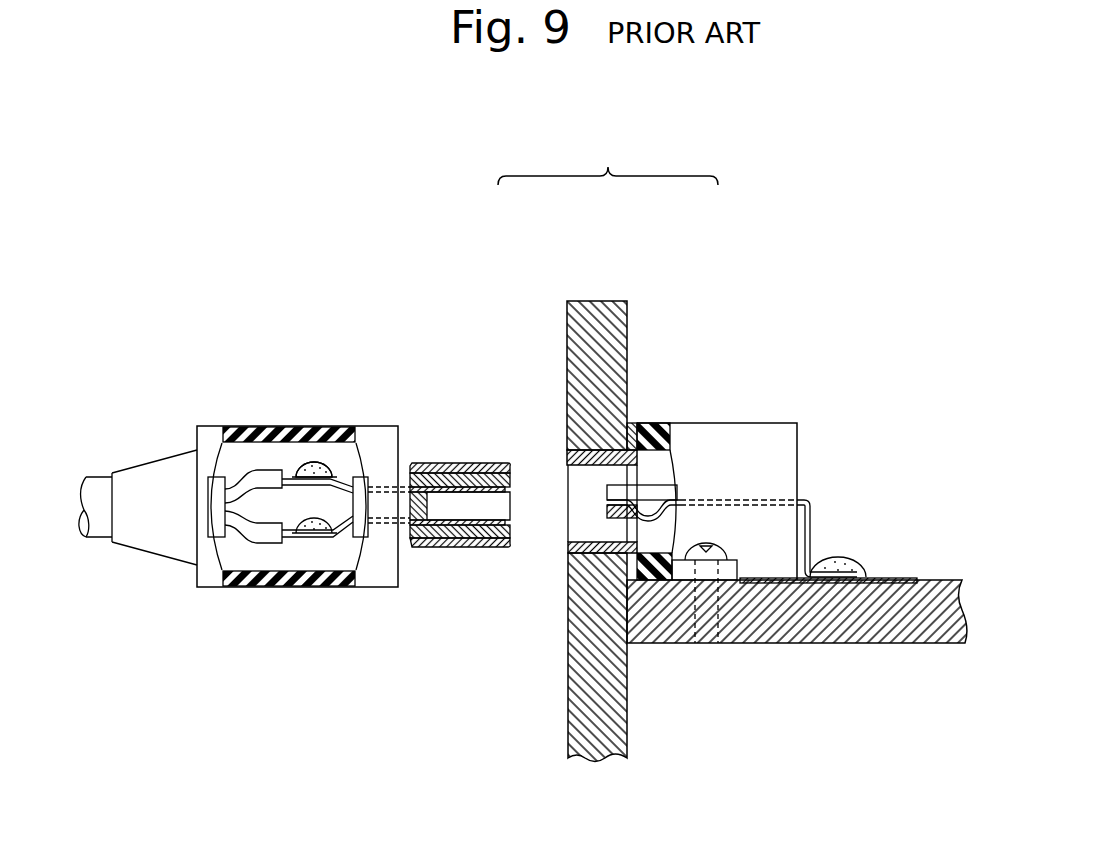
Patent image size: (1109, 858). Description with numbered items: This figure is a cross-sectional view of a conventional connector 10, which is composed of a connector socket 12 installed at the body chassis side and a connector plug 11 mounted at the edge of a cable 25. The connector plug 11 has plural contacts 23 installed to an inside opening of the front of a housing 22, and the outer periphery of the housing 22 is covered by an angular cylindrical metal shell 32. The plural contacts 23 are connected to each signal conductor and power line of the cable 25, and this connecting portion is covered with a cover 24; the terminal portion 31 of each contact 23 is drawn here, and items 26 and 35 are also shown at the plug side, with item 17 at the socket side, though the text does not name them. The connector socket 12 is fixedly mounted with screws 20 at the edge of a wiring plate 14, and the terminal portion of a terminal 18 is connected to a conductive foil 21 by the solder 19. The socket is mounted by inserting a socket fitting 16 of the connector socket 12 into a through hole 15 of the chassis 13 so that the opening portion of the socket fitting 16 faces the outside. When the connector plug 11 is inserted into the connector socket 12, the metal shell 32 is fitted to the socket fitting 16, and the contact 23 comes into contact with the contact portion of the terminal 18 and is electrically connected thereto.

The connector 10 is at (623, 152).
The connector plug 11 is at (475, 246).
The connector socket 12 is at (739, 245).
The chassis 13 is at (600, 301).
The wiring plate 14 is at (783, 630).
The through hole 15 is at (567, 450).
The socket fitting 16 is at (569, 580).
The insulating block 17 is at (656, 424).
The terminal 18 is at (668, 521).
The solder 19 is at (318, 535).
The screws 20 is at (722, 556).
The conductive foil 21 is at (905, 578).
The housing 22 is at (433, 472).
The contacts 23 is at (487, 545).
The cover 24 is at (338, 426).
The cable 25 is at (95, 492).
The wires 26 is at (262, 522).
The terminal portion 31 is at (344, 548).
The metal shell 32 is at (457, 464).
The seal 35 is at (421, 463).